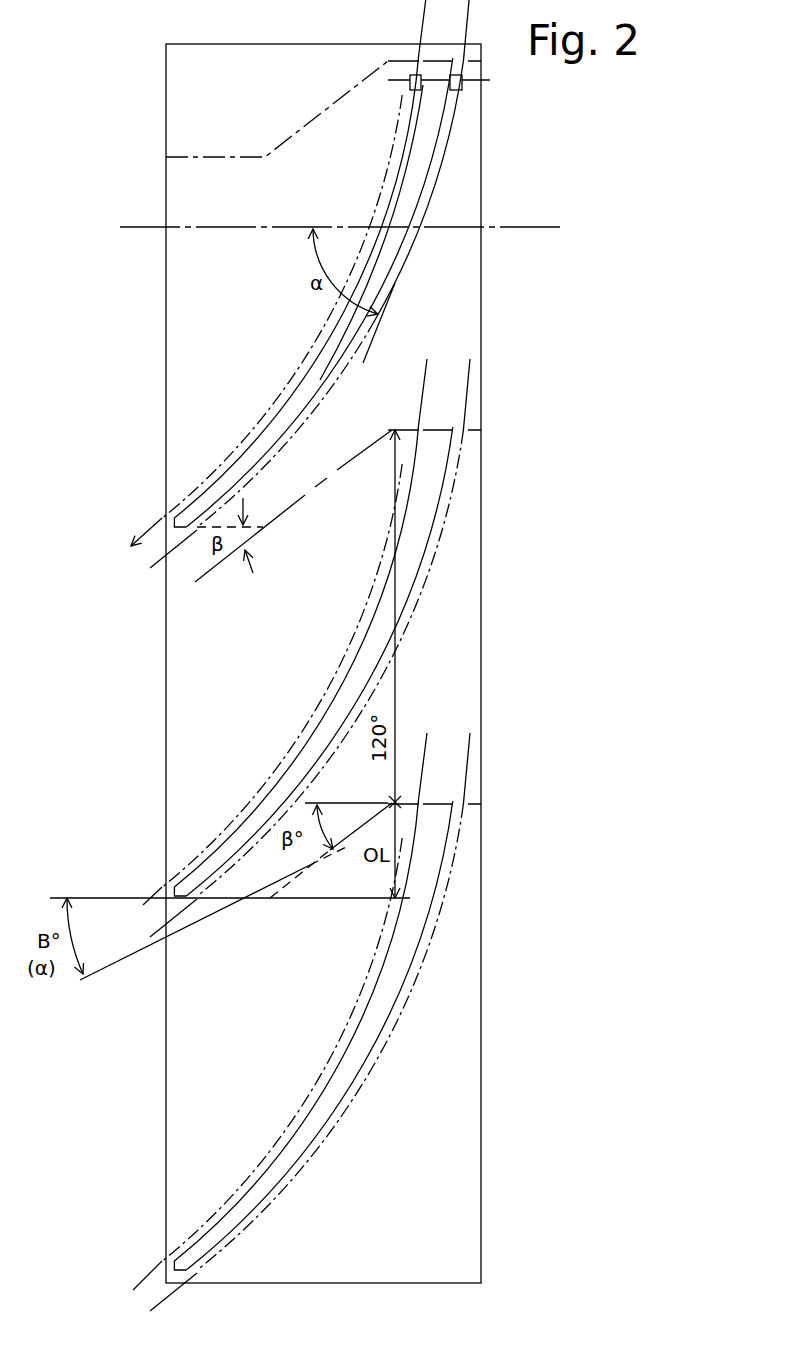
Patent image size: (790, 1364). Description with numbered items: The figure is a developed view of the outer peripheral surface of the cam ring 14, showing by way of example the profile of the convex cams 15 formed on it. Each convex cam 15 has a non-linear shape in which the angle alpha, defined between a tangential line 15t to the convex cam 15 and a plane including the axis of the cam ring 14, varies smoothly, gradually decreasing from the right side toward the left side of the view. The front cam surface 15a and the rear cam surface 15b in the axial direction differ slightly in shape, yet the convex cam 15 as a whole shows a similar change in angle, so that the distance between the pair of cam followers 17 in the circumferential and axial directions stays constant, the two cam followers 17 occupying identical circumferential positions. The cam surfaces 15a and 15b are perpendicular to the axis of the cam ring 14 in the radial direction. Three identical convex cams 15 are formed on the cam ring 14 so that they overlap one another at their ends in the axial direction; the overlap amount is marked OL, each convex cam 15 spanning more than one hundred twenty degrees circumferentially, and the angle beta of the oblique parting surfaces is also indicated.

The cam ring 14 is at (445, 320).
The convex cam 15 is at (361, 284).
The front cam surface 15a is at (313, 358).
The rear cam surface 15b is at (288, 427).
The tangential line 15t is at (372, 347).
The cam follower 17 is at (457, 92).